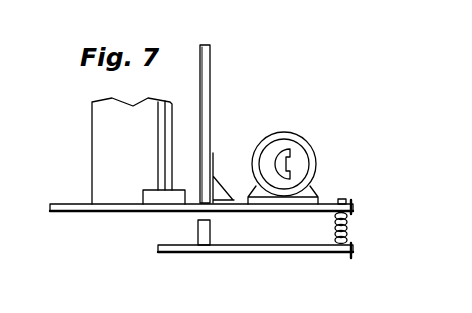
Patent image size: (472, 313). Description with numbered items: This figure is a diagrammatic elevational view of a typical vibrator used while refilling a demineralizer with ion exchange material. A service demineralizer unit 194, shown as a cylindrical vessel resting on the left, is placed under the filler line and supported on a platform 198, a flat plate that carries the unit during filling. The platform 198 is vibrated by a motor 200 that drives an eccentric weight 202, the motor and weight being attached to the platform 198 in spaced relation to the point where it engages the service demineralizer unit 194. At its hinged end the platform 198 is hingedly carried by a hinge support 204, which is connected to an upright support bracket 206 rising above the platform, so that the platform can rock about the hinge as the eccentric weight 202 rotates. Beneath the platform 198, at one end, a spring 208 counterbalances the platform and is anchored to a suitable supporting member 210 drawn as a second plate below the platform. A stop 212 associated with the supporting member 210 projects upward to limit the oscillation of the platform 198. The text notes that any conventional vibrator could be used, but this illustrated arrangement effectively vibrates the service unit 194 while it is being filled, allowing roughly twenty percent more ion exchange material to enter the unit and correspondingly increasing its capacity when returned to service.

The service demineralizer unit 194 is at (107, 130).
The platform 198 is at (50, 207).
The motor 200 is at (298, 140).
The eccentric weight 202 is at (286, 162).
The hinge support 204 is at (218, 170).
The support bracket 206 is at (205, 62).
The spring 208 is at (348, 233).
The supporting member 210 is at (283, 248).
The stop 212 is at (201, 228).